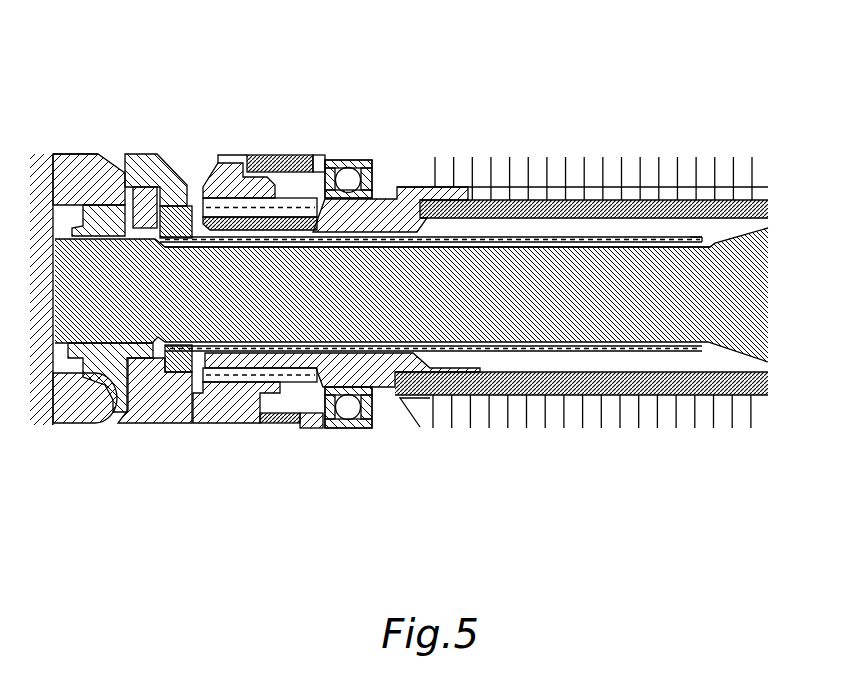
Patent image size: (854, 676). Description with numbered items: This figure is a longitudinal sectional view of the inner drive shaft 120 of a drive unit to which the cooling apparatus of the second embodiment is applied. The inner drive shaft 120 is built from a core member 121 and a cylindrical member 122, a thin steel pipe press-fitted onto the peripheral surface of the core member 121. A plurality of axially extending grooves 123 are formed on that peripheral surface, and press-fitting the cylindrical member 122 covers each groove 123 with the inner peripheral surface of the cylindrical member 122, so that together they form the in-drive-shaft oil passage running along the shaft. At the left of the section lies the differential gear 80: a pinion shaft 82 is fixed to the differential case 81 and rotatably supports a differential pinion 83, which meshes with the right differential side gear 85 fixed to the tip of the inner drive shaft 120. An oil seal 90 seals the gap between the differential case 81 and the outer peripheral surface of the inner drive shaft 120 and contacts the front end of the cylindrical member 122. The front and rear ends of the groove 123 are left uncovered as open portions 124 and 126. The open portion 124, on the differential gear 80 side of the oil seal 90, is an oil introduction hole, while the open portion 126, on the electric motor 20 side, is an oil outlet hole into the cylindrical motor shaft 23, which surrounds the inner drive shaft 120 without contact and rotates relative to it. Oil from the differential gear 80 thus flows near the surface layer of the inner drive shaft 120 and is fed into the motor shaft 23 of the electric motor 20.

The electric motor 20 is at (460, 117).
The motor shaft 23 is at (395, 187).
The differential gear 80 is at (63, 92).
The differential case 81 is at (187, 187).
The pinion shaft 82 is at (33, 157).
The differential pinion 83 is at (67, 157).
The right differential side gear 85 is at (116, 412).
The oil seal 90 is at (178, 380).
The inner drive shaft 120 is at (634, 362).
The core member 121 is at (544, 323).
The cylindrical member 122 is at (588, 237).
The groove 123 is at (517, 248).
The open portion 124 is at (157, 187).
The open portion 126 is at (703, 247).